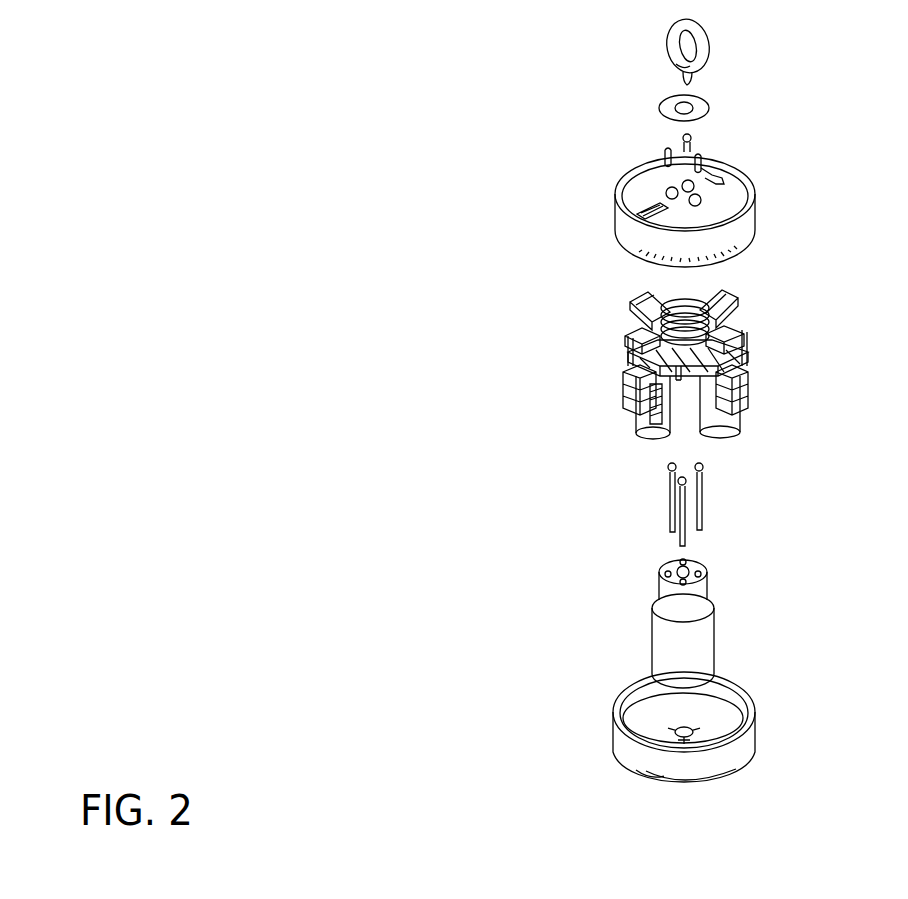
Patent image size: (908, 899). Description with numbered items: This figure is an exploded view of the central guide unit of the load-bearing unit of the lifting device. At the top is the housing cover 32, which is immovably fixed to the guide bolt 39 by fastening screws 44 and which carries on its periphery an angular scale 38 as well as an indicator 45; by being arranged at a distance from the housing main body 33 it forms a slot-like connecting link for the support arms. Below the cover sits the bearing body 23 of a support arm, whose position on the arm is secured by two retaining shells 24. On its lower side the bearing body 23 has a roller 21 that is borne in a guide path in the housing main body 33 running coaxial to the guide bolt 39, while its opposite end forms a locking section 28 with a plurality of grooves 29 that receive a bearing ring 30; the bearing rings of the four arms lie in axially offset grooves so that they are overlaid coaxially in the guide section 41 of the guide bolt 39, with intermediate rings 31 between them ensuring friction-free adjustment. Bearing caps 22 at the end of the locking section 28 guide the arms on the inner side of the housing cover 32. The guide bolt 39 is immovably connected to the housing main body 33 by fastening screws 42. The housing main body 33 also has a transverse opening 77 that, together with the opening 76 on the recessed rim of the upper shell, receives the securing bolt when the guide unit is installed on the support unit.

The opening 76 is at (672, 58).
The fastening screws 44 is at (690, 140).
The housing cover 32 is at (730, 203).
The indicator 45 is at (652, 207).
The angular scale 38 is at (748, 242).
The intermediate rings 31 is at (690, 358).
The bearing caps 22 is at (662, 338).
The locking section 28 is at (708, 381).
The grooves 29 is at (645, 364).
The bearing body 23 is at (648, 393).
The roller 21 is at (733, 423).
The bearing ring 30 is at (678, 368).
The retaining shells 24 is at (657, 408).
The fastening screws 42 is at (700, 505).
The guide section 41 is at (695, 597).
The guide bolt 39 is at (690, 640).
The housing main body 33 is at (742, 743).
The opening 77 is at (640, 773).